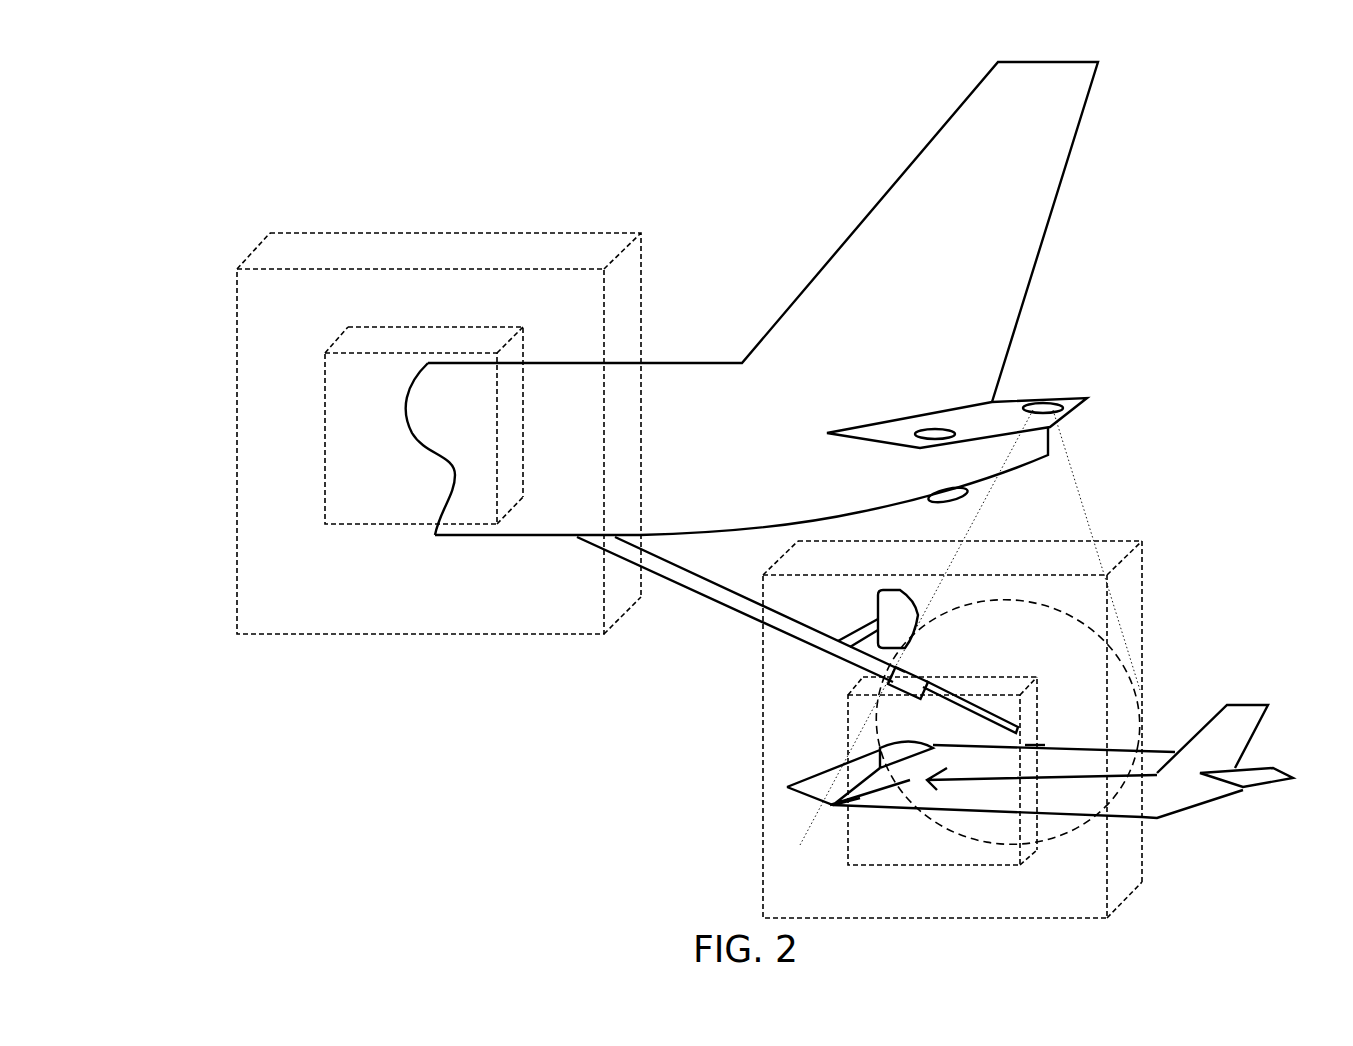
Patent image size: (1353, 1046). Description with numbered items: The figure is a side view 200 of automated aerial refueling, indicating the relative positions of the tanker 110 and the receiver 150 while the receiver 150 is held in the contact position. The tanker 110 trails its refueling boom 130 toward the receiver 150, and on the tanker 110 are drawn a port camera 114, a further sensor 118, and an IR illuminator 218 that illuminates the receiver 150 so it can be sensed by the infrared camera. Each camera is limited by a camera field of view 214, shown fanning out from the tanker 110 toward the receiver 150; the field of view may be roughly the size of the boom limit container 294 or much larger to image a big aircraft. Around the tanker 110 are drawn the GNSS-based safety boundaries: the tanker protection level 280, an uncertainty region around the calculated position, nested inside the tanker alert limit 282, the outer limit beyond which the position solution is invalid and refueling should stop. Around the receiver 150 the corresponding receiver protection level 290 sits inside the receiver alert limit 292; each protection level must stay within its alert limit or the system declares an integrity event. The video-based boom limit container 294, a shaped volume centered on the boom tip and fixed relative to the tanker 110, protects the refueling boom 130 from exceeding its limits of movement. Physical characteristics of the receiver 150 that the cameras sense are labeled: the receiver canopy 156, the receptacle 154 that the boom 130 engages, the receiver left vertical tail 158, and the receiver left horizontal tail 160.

The side view 200 is at (113, 120).
The tanker 110 is at (433, 527).
The port camera 114 is at (1048, 403).
The antenna 118 is at (950, 502).
The refueling boom 130 is at (706, 597).
The receiver 150 is at (1238, 793).
The receptacle 154 is at (1035, 747).
The receiver canopy 156 is at (887, 748).
The receiver left vertical tail 158 is at (1227, 705).
The receiver left horizontal tail 160 is at (1272, 767).
The camera field of view 214 is at (1092, 508).
The IR illuminator 218 is at (945, 443).
The tanker protection level 280 is at (322, 415).
The tanker alert limit 282 is at (237, 518).
The receiver protection level 290 is at (845, 822).
The receiver alert limit 292 is at (763, 822).
The boom limit container 294 is at (833, 805).